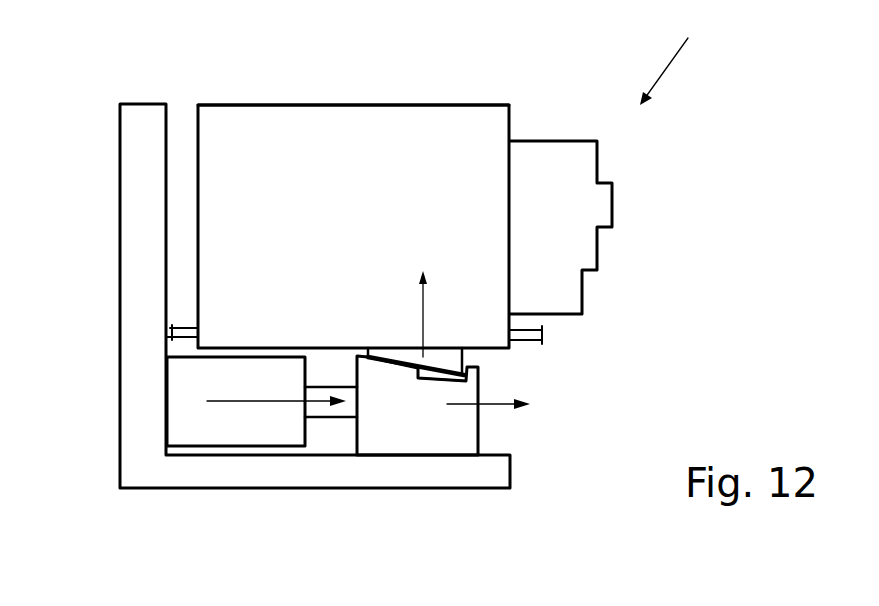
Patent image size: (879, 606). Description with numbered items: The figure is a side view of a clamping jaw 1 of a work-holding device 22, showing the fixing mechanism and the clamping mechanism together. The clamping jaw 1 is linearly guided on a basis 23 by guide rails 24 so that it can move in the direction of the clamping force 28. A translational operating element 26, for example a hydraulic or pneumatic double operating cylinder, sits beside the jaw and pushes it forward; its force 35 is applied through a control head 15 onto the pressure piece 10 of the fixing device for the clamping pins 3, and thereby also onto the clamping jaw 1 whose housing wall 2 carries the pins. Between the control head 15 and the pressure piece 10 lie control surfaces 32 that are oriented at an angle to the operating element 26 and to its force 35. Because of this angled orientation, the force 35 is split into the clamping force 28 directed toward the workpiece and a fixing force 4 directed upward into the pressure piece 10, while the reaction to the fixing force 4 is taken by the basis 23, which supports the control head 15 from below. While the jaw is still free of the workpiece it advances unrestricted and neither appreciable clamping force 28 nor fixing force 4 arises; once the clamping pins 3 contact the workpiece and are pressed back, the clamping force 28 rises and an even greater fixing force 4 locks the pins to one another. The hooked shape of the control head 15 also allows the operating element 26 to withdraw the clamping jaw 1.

The clamping jaw 1 is at (332, 148).
The housing wall 2 is at (378, 122).
The clamping pins 3 is at (563, 163).
The fixing force 4 is at (425, 315).
The pressure piece 10 is at (387, 353).
The control head 15 is at (387, 430).
The assembly 22 is at (677, 55).
The basis 23 is at (141, 132).
The guide rails 24 is at (172, 328).
The translational operating element 26 is at (197, 412).
The clamping force 28 is at (495, 407).
The control surfaces 32 is at (418, 378).
The force 35 is at (247, 401).